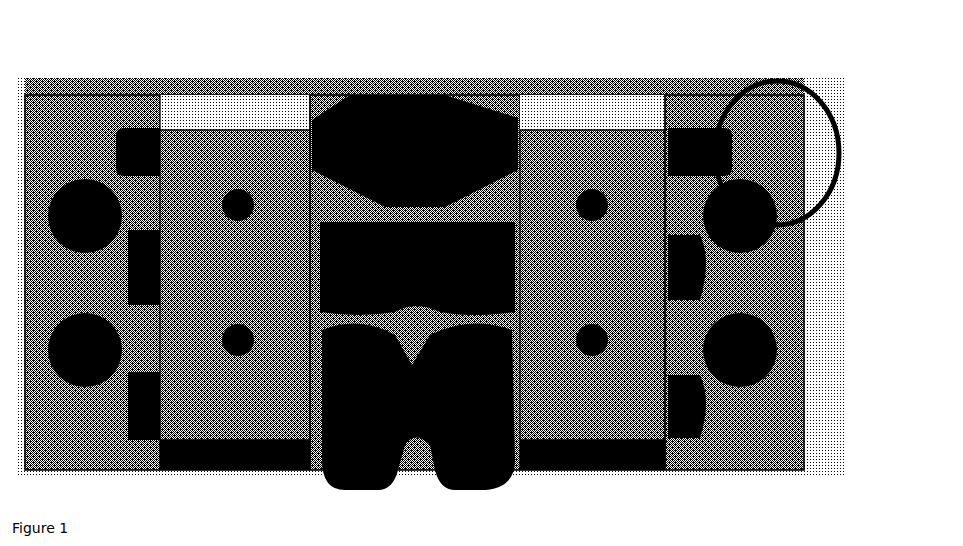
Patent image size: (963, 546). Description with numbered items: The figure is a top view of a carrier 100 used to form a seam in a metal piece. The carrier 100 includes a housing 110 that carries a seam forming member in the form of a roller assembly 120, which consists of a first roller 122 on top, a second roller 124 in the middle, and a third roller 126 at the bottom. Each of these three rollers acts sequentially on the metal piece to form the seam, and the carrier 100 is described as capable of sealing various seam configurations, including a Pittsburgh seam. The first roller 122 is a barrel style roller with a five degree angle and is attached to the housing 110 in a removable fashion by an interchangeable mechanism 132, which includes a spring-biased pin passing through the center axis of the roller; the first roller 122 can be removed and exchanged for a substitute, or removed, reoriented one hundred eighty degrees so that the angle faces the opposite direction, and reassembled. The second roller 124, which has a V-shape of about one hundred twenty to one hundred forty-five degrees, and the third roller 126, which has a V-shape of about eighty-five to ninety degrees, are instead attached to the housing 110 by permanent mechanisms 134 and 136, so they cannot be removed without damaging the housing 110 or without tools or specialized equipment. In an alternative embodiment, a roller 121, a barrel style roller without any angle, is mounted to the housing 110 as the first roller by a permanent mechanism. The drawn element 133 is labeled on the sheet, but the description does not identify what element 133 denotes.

The carrier 100 is at (64, 120).
The housing 110 is at (203, 135).
The roller assembly 120 is at (312, 278).
The roller 121 is at (472, 545).
The first roller 122 is at (480, 105).
The second roller 124 is at (515, 264).
The third roller 126 is at (497, 478).
The interchangeable mechanism 132 is at (706, 128).
The right end panel 133 is at (733, 545).
The permanent mechanism 134 is at (712, 273).
The permanent mechanism 136 is at (710, 428).